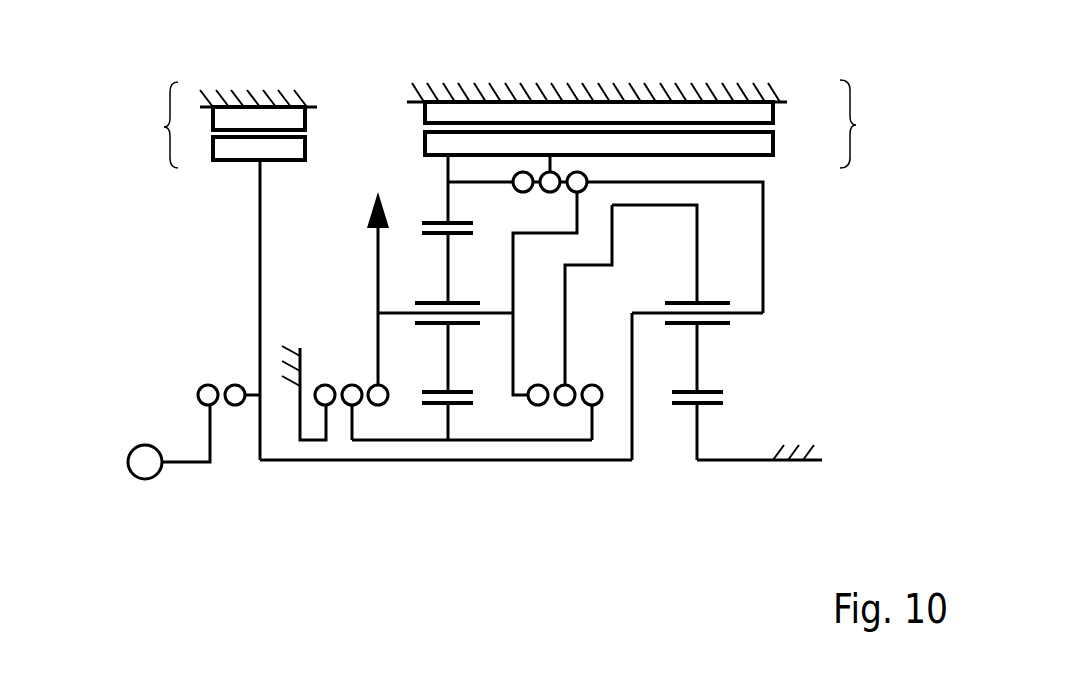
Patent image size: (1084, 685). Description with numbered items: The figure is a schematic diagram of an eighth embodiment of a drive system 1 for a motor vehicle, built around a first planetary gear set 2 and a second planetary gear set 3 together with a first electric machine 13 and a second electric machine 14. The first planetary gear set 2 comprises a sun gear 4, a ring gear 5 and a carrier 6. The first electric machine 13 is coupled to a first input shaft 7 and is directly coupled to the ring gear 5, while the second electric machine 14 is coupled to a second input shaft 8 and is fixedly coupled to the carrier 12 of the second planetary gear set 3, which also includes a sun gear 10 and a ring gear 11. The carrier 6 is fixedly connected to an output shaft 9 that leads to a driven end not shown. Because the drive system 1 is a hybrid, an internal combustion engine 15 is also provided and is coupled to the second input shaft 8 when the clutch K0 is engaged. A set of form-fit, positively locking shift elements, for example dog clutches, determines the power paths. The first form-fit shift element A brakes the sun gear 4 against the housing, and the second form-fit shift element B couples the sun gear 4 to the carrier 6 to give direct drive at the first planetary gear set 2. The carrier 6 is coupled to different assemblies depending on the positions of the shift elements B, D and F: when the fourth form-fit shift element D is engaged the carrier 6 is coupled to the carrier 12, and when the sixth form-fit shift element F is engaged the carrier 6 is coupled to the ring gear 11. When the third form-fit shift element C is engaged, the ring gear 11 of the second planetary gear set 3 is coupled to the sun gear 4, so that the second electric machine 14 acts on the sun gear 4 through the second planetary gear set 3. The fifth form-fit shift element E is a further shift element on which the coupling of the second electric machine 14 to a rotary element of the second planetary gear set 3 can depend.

The drive system 1 is at (125, 503).
The first planetary gear set 2 is at (447, 472).
The second planetary gear set 3 is at (698, 472).
The sun gear 4 is at (427, 441).
The ring gear 5 is at (447, 214).
The carrier 6 is at (403, 312).
The first input shaft 7 is at (449, 180).
The second input shaft 8 is at (258, 260).
The output shaft 9 is at (378, 292).
The sun gear 10 is at (697, 437).
The ring gear 11 is at (625, 205).
The carrier 12 is at (745, 315).
The first electric machine 13 is at (856, 125).
The second electric machine 14 is at (164, 127).
The internal combustion engine 15 is at (138, 448).
The clutch K0 is at (222, 408).
The first form-fit shift element A is at (338, 408).
The second form-fit shift element B is at (366, 408).
The third form-fit shift element C is at (579, 408).
The fourth form-fit shift element D is at (566, 190).
The fifth form-fit shift element E is at (538, 188).
The sixth form-fit shift element F is at (550, 408).